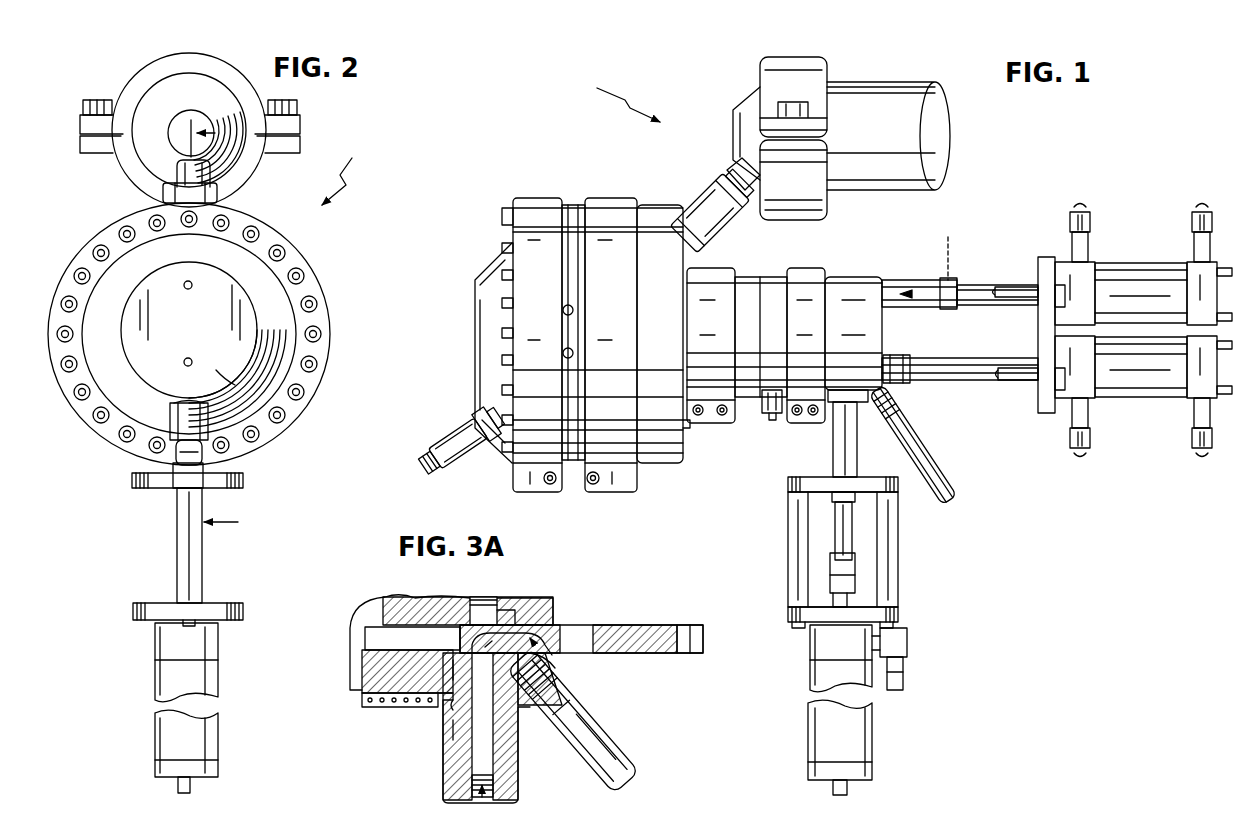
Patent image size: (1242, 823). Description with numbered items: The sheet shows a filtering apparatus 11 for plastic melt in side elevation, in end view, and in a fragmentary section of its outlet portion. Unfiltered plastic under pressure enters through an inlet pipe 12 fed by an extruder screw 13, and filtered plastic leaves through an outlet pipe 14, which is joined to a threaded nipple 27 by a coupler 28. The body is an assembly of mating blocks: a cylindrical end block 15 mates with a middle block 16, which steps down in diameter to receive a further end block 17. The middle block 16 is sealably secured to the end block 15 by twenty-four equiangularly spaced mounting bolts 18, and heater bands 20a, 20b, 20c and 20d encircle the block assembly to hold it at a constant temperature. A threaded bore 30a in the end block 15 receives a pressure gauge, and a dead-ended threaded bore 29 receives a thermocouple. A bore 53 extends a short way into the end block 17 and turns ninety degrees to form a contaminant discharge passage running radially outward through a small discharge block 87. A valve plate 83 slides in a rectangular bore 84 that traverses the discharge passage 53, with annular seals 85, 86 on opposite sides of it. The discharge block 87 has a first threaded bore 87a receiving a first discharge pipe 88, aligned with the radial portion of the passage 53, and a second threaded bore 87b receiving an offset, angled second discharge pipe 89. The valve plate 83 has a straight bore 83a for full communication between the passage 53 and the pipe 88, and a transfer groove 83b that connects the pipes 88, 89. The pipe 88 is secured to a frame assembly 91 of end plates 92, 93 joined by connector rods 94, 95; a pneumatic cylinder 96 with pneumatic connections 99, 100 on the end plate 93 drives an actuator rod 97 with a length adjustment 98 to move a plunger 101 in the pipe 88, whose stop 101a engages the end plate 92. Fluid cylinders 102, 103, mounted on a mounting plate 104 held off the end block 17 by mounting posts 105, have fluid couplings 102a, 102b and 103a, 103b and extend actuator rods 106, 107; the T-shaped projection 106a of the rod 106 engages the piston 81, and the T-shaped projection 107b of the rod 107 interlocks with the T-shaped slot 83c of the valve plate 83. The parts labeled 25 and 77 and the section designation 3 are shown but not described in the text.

In FIG. 2, the filtering apparatus 11 is at (348, 169).
In FIG. 1, the filtering apparatus 11 is at (618, 98).
In FIG. 2, the inlet pipe 12 is at (158, 178).
In FIG. 1, the inlet pipe 12 is at (730, 170).
In FIG. 2, the extruder screw 13 is at (158, 118).
In FIG. 1, the extruder screw 13 is at (862, 105).
In FIG. 2, the outlet pipe 14 is at (204, 462).
In FIG. 1, the outlet pipe 14 is at (428, 462).
In FIG. 2, the end block 15 is at (278, 326).
In FIG. 1, the end block 15 is at (488, 300).
In FIG. 1, the middle block 16 is at (686, 446).
In FIG. 1, the end block 17 is at (849, 272).
In FIG. 3A, the end block 17 is at (556, 595).
In FIG. 2, the mounting bolts 18 is at (290, 252).
In FIG. 1, the mounting bolts 18 is at (508, 245).
In FIG. 1, the heater band 20a is at (530, 198).
In FIG. 1, the heater band 20b is at (605, 198).
In FIG. 1, the heater band 20c is at (722, 270).
In FIG. 1, the heater band 20d is at (805, 270).
In FIG. 3A, the heater band 20d is at (372, 707).
In FIG. 2, the fitting 25 is at (218, 192).
In FIG. 1, the fitting 25 is at (693, 200).
In FIG. 2, the threaded nipple 27 is at (180, 405).
In FIG. 1, the threaded nipple 27 is at (470, 410).
In FIG. 2, the coupler 28 is at (196, 410).
In FIG. 1, the coupler 28 is at (445, 432).
In FIG. 2, the dead ended threaded bore 29 is at (188, 358).
In FIG. 2, the threaded bore 30a is at (188, 281).
In FIG. 2, the section line 3 is at (214, 332).
In FIG. 3A, the contaminant discharge passage 53 is at (480, 605).
In FIG. 1, the fitting 77 is at (766, 420).
In FIG. 1, the piston 81 is at (926, 280).
In FIG. 1, the valve plate 83 is at (913, 366).
In FIG. 3A, the valve plate 83 is at (656, 655).
In FIG. 3A, the straight bore 83a is at (615, 625).
In FIG. 3A, the transfer groove 83b is at (517, 620).
In FIG. 3A, the T-shaped slot 83c is at (686, 628).
In FIG. 3A, the bore of rectangular cross section 84 is at (383, 637).
In FIG. 3A, the annular seal 85 is at (440, 597).
In FIG. 3A, the annular seal 86 is at (465, 647).
In FIG. 1, the discharge block 87 is at (847, 392).
In FIG. 3A, the discharge block 87 is at (383, 672).
In FIG. 3A, the first threaded bore 87a is at (445, 705).
In FIG. 3A, the second threaded bore 87b is at (545, 672).
In FIG. 1, the first contaminant discharge pipe 88 is at (858, 444).
In FIG. 3A, the first contaminant discharge pipe 88 is at (445, 790).
In FIG. 1, the second discharge pipe 89 is at (929, 448).
In FIG. 3A, the second discharge pipe 89 is at (594, 755).
In FIG. 2, the frame assembly 91 is at (175, 522).
In FIG. 1, the frame assembly 91 is at (900, 567).
In FIG. 2, the end plate 92 is at (243, 480).
In FIG. 1, the end plate 92 is at (800, 478).
In FIG. 2, the end plate 93 is at (243, 608).
In FIG. 1, the end plate 93 is at (898, 616).
In FIG. 1, the longitudinal connector rod 94 is at (888, 593).
In FIG. 2, the longitudinal connector rod 95 is at (180, 574).
In FIG. 1, the longitudinal connector rod 95 is at (795, 512).
In FIG. 2, the pneumatic cylinder 96 is at (218, 714).
In FIG. 1, the pneumatic cylinder 96 is at (870, 690).
In FIG. 1, the actuator rod 97 is at (850, 530).
In FIG. 1, the length adjustment 98 is at (830, 578).
In FIG. 1, the pneumatic connection 99 is at (905, 680).
In FIG. 2, the pneumatic connection 100 is at (191, 787).
In FIG. 1, the pneumatic connection 100 is at (833, 790).
In FIG. 3A, the plunger 101 is at (494, 790).
In FIG. 1, the stop 101a is at (832, 496).
In FIG. 1, the fluid cylinder 102 is at (1133, 262).
In FIG. 1, the fluid coupling 102a is at (1085, 210).
In FIG. 1, the fluid coupling 102b is at (1195, 210).
In FIG. 1, the fluid cylinder 103 is at (1140, 392).
In FIG. 1, the fluid coupling 103a is at (1075, 452).
In FIG. 1, the fluid coupling 103b is at (1197, 452).
In FIG. 1, the mounting plate 104 is at (1045, 265).
In FIG. 1, the mounting posts 105 is at (1008, 288).
In FIG. 1, the actuator rod 106 is at (980, 305).
In FIG. 1, the T-shaped projection 106a is at (952, 247).
In FIG. 1, the actuator rod 107 is at (947, 380).
In FIG. 1, the T-shaped projection 107b is at (893, 355).